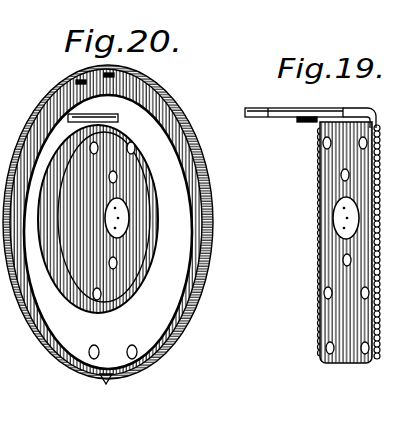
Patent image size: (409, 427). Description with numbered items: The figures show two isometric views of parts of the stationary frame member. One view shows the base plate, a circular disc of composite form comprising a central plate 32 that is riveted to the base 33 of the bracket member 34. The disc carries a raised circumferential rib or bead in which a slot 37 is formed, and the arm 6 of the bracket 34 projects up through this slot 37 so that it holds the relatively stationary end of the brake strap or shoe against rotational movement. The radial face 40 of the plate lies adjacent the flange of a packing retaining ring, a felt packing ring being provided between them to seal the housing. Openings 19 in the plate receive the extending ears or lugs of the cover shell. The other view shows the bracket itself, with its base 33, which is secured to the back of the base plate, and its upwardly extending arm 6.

In FIG. 20, the slot 37 is at (41, 108).
In FIG. 20, the central plate 32 is at (143, 221).
In FIG. 20, the radial face 40 is at (67, 320).
In FIG. 20, the openings 19 is at (128, 372).
In FIG. 19, the arm 6 is at (306, 110).
In FIG. 19, the bracket member 34 is at (371, 114).
In FIG. 19, the base 33 is at (333, 319).